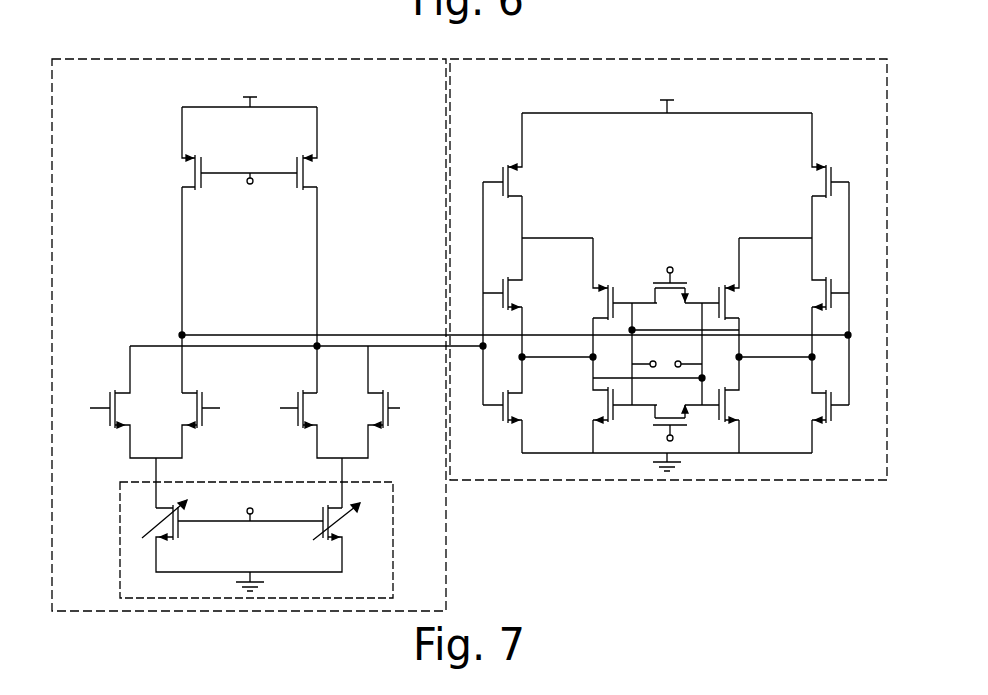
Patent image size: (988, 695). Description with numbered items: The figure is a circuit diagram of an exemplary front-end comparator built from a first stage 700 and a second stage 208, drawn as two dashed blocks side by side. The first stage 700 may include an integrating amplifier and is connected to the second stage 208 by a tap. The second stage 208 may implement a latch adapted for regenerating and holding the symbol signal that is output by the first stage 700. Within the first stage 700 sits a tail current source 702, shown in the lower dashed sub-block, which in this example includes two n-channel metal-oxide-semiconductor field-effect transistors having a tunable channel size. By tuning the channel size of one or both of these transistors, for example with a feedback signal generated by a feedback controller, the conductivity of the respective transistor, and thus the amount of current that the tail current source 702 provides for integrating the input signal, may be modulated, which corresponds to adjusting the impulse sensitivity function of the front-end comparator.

The first stage 700 is at (110, 59).
The tail current source 702 is at (120, 536).
The second stage 208 is at (722, 481).